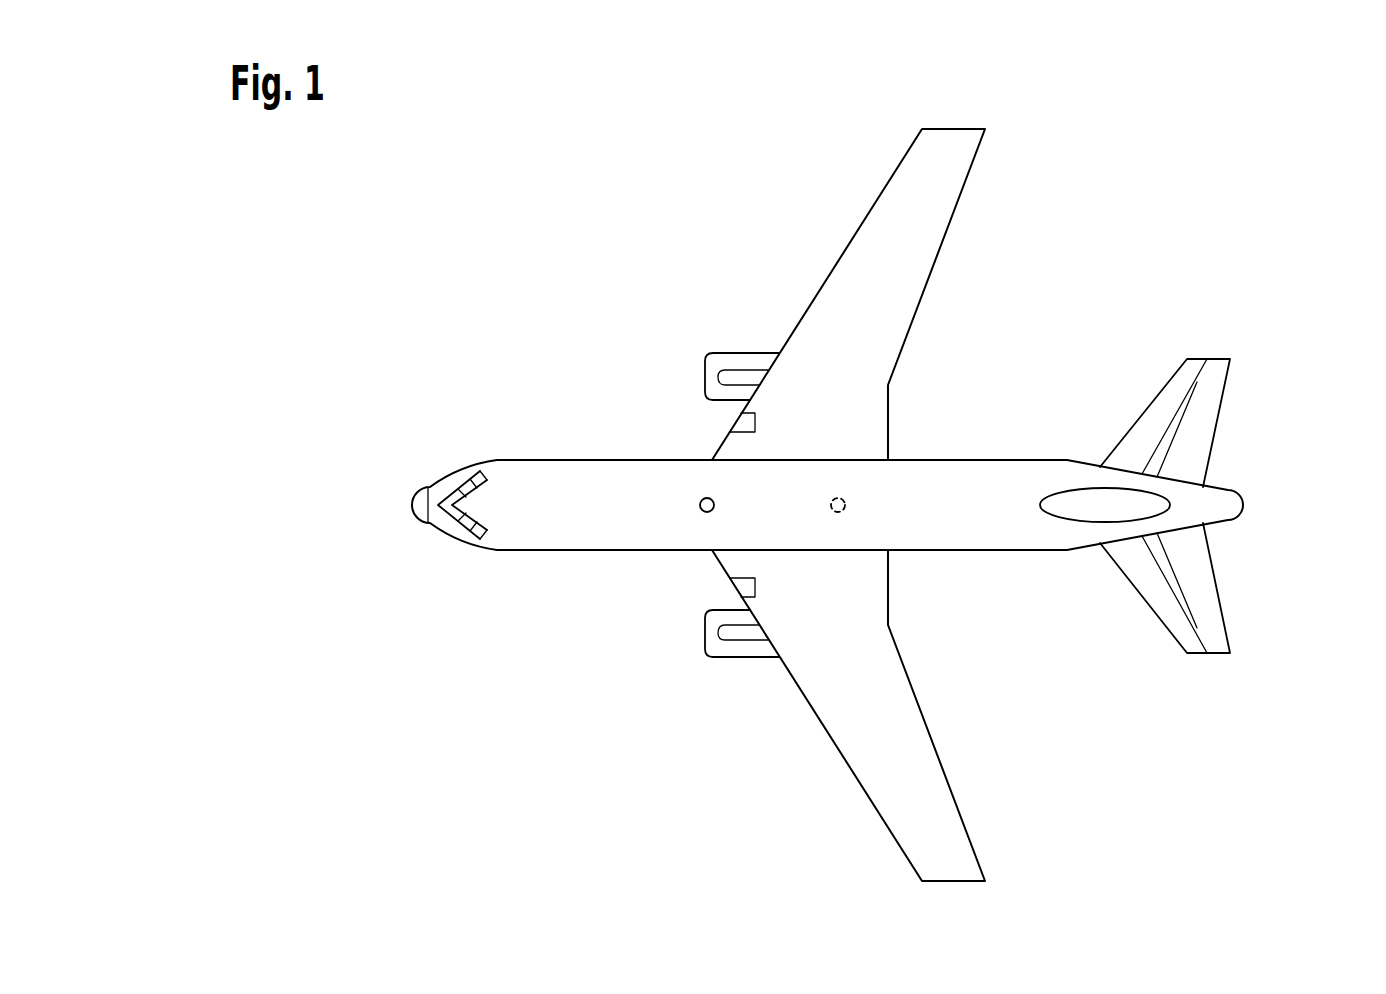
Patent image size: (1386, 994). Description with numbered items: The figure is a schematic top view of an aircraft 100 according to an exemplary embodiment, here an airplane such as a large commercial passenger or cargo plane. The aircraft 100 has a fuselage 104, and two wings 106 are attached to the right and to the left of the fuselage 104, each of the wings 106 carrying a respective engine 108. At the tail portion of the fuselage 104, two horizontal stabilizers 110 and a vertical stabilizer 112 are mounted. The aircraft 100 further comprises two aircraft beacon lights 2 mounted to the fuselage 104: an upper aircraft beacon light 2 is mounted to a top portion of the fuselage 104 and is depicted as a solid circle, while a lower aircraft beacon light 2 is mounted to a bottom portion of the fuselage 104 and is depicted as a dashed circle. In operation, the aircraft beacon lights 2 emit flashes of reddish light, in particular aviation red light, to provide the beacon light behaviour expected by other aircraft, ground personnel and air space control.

The aircraft 100 is at (1118, 214).
The fuselage 104 is at (963, 537).
The wings 106 is at (873, 229).
The engine 108 is at (692, 363).
The horizontal stabilizers 110 is at (1203, 420).
The vertical stabilizer 112 is at (1072, 507).
The aircraft beacon light 2 is at (700, 505).